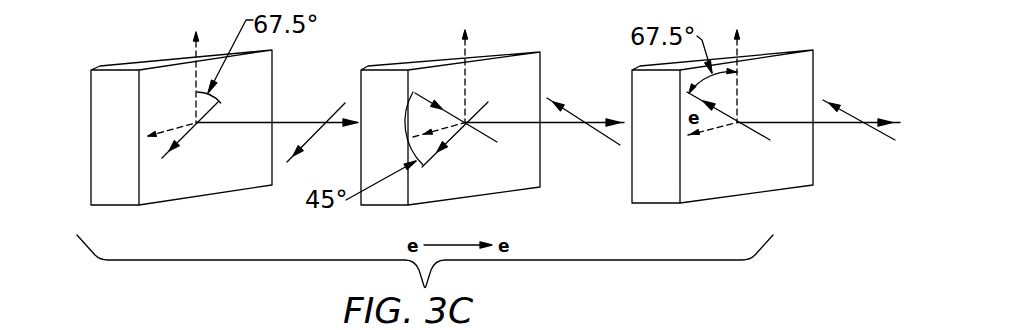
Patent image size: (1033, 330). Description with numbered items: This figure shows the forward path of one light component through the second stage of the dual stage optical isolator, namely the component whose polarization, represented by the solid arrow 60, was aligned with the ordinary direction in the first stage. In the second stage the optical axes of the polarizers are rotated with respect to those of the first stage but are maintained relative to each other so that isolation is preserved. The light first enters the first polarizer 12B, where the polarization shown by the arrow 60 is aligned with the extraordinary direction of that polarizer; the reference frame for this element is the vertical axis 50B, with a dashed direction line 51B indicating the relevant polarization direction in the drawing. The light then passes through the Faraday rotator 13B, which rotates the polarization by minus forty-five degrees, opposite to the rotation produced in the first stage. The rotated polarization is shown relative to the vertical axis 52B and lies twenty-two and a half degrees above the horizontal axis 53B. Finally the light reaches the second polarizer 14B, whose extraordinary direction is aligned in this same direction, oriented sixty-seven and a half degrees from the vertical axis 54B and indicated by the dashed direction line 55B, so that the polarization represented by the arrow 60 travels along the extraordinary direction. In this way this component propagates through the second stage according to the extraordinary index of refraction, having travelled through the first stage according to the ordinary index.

The first polarizer of the second stage 12B is at (263, 75).
The Faraday rotator 13B is at (540, 53).
The second polarizer of the second stage 14B is at (803, 62).
The vertical axis 50B is at (193, 76).
The polarization direction indicator of first element 51B is at (163, 130).
The vertical axis 52B is at (467, 80).
The horizontal axis 53B is at (447, 128).
The vertical axis 54B is at (738, 92).
The polarization direction indicator of third element 55B is at (705, 137).
The solid arrow 60 is at (183, 143).